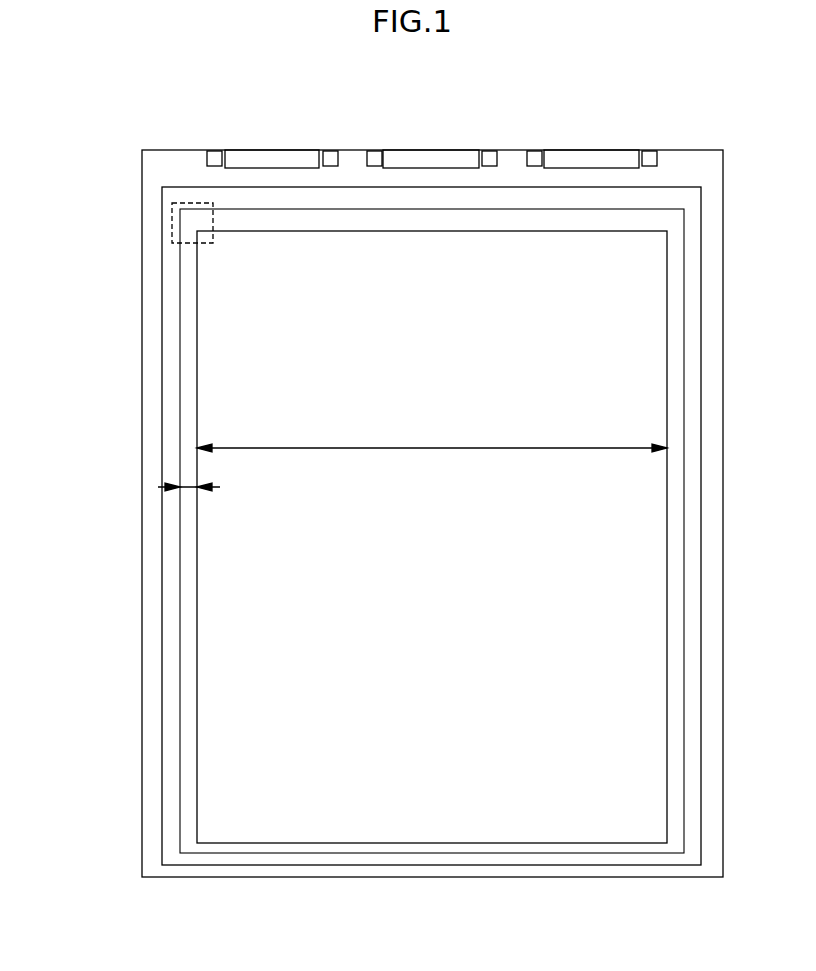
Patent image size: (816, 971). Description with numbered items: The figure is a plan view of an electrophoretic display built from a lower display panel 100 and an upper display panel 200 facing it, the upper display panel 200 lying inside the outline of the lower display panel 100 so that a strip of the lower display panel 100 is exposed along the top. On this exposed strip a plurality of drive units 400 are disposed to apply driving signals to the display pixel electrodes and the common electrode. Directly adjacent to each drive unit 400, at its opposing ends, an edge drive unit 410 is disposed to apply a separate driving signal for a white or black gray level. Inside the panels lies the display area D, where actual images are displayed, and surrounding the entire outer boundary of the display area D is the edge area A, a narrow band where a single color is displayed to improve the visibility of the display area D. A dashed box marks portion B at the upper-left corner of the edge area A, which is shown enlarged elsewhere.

The lower display panel 100 is at (142, 305).
The upper display panel 200 is at (162, 367).
The drive unit 400 is at (273, 158).
The edge drive unit 410 is at (211, 150).
The edge area A is at (189, 487).
The portion B is at (172, 233).
The display area D is at (432, 433).